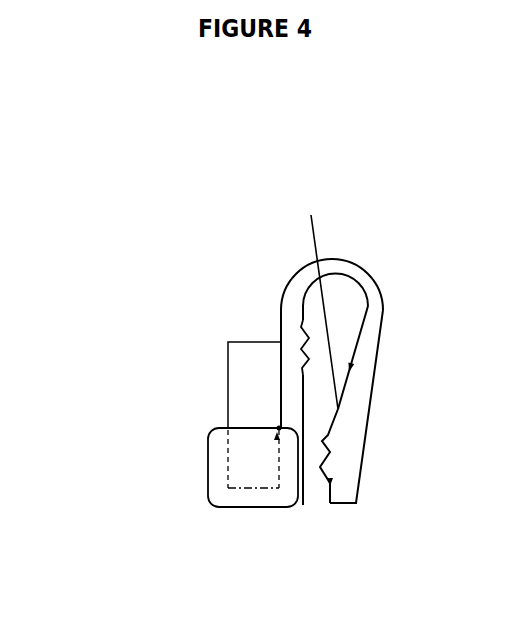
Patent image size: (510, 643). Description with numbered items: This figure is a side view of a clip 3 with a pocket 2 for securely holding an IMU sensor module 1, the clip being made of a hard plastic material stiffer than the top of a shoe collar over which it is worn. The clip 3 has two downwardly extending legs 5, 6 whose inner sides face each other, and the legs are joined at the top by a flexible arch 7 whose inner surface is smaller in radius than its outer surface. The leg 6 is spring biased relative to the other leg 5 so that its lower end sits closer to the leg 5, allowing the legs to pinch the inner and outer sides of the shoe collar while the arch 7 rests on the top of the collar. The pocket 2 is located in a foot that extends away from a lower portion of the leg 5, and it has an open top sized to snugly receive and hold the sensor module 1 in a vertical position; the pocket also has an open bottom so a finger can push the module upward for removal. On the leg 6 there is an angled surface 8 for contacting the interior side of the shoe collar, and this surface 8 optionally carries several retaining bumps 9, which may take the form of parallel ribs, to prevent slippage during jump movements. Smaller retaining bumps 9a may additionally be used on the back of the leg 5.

The IMU sensor module 1 is at (228, 385).
The pocket 2 is at (207, 455).
The clip 3 is at (301, 261).
The leg 5 is at (280, 315).
The leg 6 is at (382, 330).
The flexible arch 7 is at (343, 258).
The angled surface 8 is at (332, 298).
The retaining bumps 9 is at (329, 435).
The smaller retaining bumps 9a is at (310, 367).